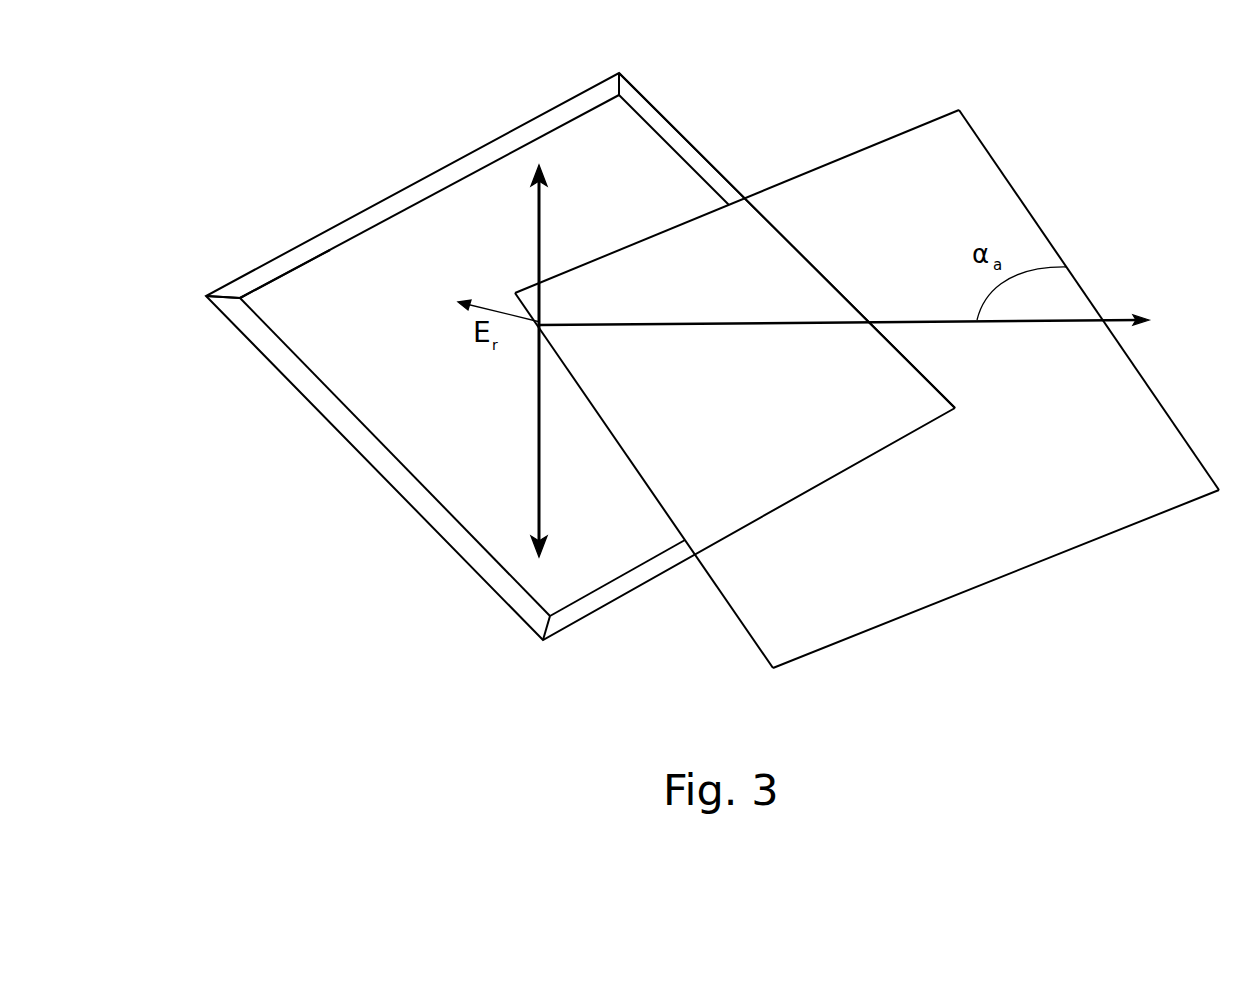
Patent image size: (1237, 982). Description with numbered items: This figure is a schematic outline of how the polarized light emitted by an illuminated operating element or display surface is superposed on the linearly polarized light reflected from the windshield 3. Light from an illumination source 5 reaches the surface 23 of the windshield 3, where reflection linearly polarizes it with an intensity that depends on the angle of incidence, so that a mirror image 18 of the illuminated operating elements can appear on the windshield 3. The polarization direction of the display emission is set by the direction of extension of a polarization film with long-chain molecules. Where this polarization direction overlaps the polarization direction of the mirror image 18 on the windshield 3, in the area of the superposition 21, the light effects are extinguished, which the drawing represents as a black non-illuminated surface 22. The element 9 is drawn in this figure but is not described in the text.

The windshield 3 is at (575, 593).
The illumination source 5 is at (924, 578).
The surface of second plate 9 is at (944, 140).
The mirror image 18 is at (650, 113).
The superposition 21 is at (743, 193).
The black non-illuminated surface 22 is at (688, 522).
The surface 23 is at (290, 295).